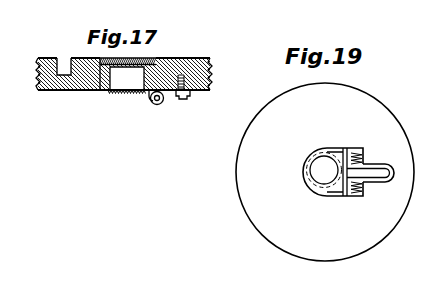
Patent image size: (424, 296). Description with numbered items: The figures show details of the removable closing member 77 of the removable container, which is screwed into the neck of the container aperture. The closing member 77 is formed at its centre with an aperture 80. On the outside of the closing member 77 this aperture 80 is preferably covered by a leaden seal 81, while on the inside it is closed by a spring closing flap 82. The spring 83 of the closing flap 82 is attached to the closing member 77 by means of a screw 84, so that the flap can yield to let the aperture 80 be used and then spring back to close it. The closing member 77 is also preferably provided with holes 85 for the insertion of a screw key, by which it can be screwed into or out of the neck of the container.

In FIG. 17, the closing member 77 is at (83, 80).
In FIG. 17, the aperture 80 is at (124, 80).
In FIG. 17, the leaden seal 81 is at (136, 58).
In FIG. 17, the spring closing flap 82 is at (128, 92).
In FIG. 19, the spring closing flap 82 is at (305, 172).
In FIG. 17, the spring 83 is at (159, 105).
In FIG. 19, the spring 83 is at (362, 152).
In FIG. 17, the screw 84 is at (186, 99).
In FIG. 17, the holes 85 is at (65, 58).